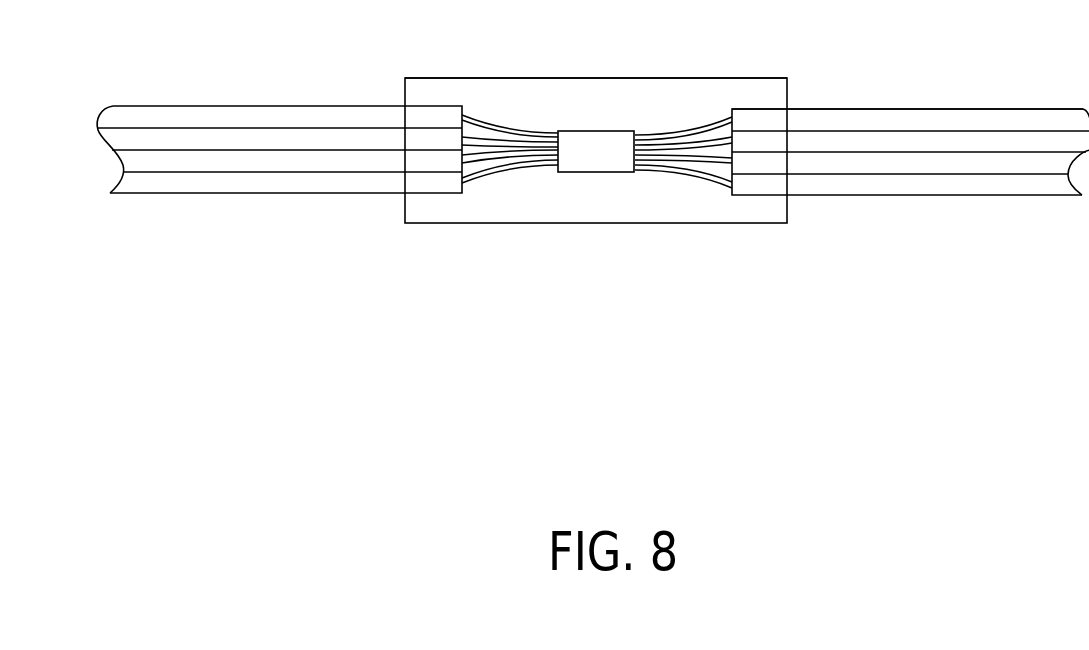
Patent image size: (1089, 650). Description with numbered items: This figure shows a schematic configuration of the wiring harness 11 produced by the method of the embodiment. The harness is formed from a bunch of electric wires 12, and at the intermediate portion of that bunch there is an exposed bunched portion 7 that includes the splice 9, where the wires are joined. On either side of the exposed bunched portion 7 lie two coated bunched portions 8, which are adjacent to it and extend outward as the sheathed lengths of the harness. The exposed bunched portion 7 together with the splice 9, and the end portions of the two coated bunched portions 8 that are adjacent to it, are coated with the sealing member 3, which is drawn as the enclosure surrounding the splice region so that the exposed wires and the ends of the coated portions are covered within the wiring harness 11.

The sealing member 3 is at (667, 77).
The exposed bunched portion 7 is at (702, 172).
The coated bunched portions 8 is at (288, 106).
The splice 9 is at (603, 165).
The wiring harness 11 is at (932, 301).
The bunch of electric wires 12 is at (1005, 109).